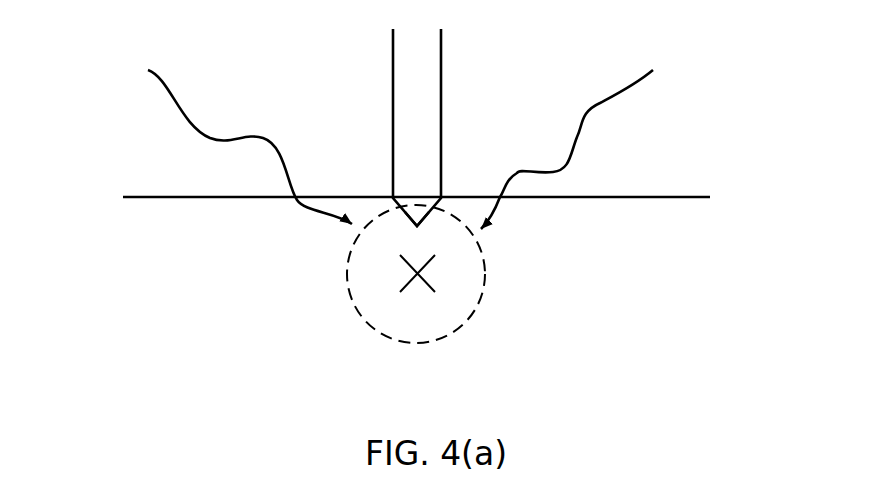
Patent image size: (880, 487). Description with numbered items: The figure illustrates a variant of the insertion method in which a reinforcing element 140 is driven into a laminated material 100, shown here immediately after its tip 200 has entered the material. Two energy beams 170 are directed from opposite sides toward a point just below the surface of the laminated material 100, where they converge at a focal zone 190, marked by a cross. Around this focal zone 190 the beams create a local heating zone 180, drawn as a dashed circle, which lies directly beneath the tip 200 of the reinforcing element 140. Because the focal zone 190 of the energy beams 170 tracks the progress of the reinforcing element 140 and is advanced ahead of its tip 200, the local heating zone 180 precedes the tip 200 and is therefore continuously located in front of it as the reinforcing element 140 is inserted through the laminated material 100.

The laminated material 100 is at (255, 273).
The reinforcing element 140 is at (427, 85).
The energy beams 170 is at (163, 136).
The local heating zone 180 is at (370, 336).
The focal zone 190 is at (421, 300).
The tip 200 is at (415, 210).